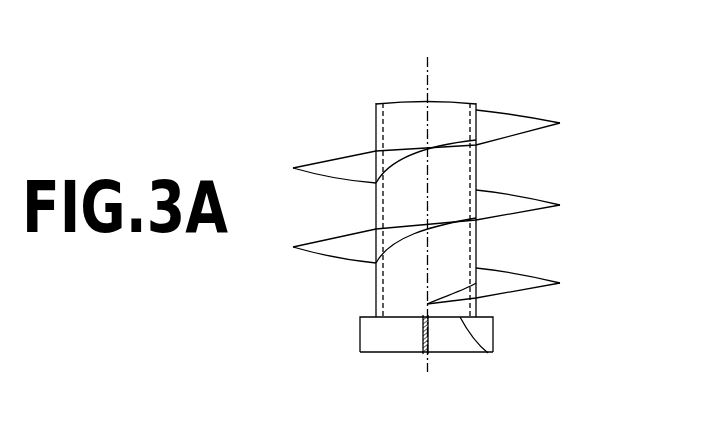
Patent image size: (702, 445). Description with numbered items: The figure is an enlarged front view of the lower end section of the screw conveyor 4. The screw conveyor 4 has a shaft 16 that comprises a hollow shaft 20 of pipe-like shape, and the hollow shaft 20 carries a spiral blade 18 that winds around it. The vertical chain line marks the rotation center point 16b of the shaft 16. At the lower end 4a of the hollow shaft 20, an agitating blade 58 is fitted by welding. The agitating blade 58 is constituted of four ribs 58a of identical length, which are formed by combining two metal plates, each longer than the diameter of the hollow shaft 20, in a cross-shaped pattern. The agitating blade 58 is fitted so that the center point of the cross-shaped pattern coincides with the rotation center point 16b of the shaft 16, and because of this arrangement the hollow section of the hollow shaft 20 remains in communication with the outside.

The screw conveyor 4 is at (563, 98).
The lower end of the hollow shaft 4a is at (488, 353).
The shaft 16 is at (476, 165).
The rotation center point of the shaft 16b is at (427, 83).
The spiral blade 18 is at (560, 123).
The hollow shaft 20 is at (376, 205).
The agitating blade 58 is at (493, 330).
The ribs 58a is at (392, 352).